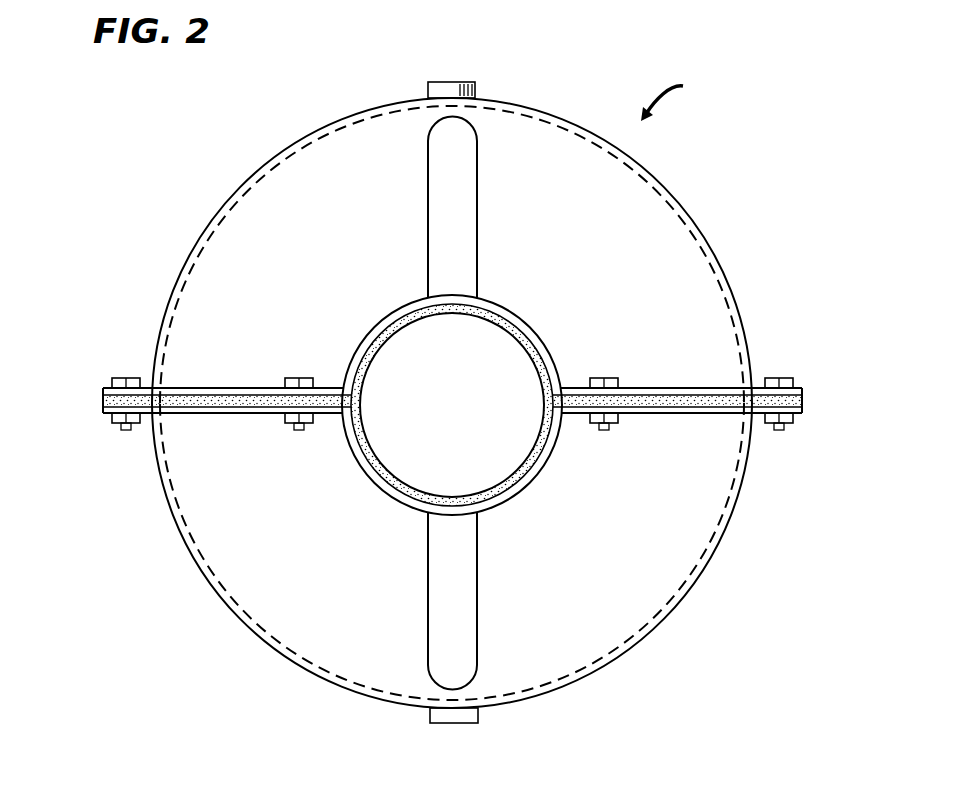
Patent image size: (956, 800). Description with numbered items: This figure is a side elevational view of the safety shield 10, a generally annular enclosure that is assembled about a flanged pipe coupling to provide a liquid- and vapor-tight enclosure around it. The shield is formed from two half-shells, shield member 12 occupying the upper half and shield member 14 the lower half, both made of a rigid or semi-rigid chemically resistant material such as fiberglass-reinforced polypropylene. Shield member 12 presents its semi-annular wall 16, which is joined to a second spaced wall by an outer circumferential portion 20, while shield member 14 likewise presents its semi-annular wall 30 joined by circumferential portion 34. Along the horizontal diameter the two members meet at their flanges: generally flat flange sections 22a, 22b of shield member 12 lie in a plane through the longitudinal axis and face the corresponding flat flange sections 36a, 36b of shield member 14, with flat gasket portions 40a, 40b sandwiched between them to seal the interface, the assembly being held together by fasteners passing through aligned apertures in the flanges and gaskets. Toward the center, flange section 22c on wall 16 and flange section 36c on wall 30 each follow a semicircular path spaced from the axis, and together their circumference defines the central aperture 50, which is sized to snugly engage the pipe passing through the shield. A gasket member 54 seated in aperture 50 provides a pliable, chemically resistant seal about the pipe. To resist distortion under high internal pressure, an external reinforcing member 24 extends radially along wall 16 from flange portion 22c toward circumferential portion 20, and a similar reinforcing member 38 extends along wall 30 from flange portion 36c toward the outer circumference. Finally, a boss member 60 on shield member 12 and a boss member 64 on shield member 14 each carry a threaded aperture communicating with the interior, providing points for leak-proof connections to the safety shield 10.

The safety shield 10 is at (675, 94).
The shield member 12 is at (672, 213).
The shield member 14 is at (668, 583).
The semi-annular wall 16 is at (305, 162).
The circumferential portion 20 is at (524, 103).
The flange section 22a is at (762, 392).
The flange section 22b is at (176, 392).
The flange section 22c is at (537, 325).
The reinforcing member 24 is at (478, 216).
The semi-annular wall 30 is at (285, 622).
The circumferential portion 34 is at (535, 697).
The flange section 36a is at (763, 415).
The flange section 36b is at (178, 413).
The flange section 36c is at (537, 473).
The reinforcing member 38 is at (478, 574).
The gasket portion 40a is at (103, 402).
The gasket portion 40b is at (802, 402).
The aperture 50 is at (445, 434).
The gasket member 54 is at (523, 330).
The boss member 60 is at (428, 88).
The boss member 64 is at (430, 718).